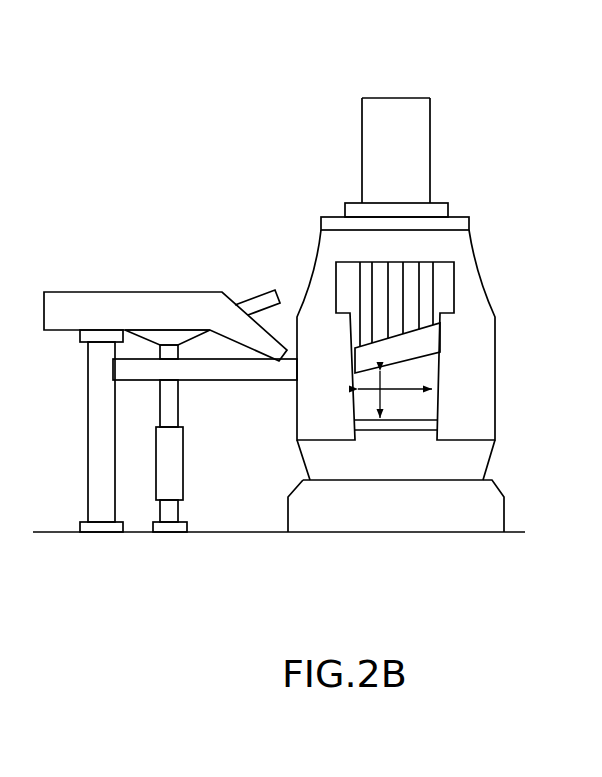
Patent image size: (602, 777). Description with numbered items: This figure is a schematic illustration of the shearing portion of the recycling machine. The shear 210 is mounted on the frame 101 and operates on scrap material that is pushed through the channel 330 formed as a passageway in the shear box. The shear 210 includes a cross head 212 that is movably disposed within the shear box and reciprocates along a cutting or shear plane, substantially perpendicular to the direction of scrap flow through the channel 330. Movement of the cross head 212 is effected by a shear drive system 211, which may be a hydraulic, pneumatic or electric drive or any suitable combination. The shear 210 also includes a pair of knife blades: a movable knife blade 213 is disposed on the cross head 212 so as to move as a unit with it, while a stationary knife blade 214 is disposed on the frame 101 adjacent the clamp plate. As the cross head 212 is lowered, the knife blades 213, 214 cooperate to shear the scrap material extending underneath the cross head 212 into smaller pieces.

The frame 101 is at (486, 282).
The shear 210 is at (408, 155).
The shear drive system 211 is at (383, 97).
The cross head 212 is at (417, 348).
The movable knife blade 213 is at (373, 372).
The stationary knife blade 214 is at (405, 419).
The channel 330 is at (422, 372).